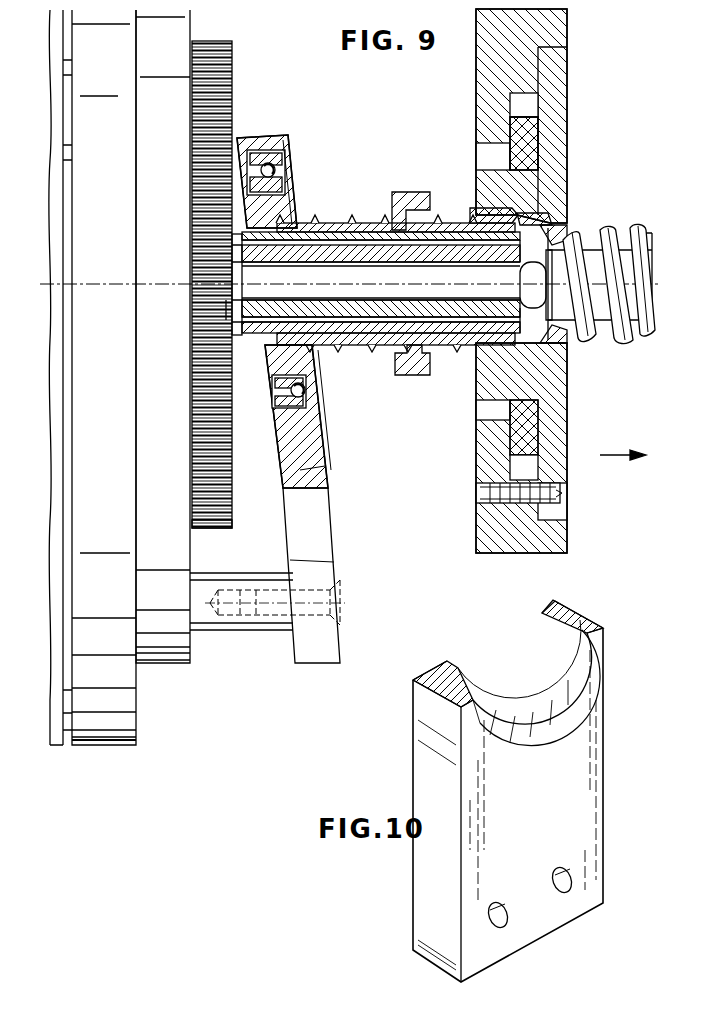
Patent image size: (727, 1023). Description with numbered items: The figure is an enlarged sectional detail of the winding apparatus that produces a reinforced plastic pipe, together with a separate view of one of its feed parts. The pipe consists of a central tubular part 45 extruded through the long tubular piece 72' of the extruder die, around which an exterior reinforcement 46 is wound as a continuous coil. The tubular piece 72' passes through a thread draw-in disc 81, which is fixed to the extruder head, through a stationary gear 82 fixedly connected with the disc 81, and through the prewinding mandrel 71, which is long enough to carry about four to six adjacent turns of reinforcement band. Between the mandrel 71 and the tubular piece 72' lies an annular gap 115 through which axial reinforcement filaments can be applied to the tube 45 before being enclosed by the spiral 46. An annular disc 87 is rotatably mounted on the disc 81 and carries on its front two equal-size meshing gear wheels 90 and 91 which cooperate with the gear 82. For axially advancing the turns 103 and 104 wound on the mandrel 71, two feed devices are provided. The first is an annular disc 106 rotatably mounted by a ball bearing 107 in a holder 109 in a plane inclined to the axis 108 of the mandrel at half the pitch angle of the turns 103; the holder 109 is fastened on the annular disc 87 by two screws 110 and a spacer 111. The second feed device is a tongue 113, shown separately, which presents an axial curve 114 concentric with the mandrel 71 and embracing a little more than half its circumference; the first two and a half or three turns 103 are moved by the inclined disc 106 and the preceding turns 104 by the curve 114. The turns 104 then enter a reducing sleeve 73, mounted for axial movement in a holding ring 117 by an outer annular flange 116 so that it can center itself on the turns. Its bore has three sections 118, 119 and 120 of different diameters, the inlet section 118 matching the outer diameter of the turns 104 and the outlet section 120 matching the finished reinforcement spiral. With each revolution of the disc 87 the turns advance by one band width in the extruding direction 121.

In FIG. 9, the central tubular part 45 is at (613, 236).
In FIG. 9, the exterior reinforcement 46 is at (620, 340).
In FIG. 9, the prewinding mandrel 71 is at (376, 240).
In FIG. 9, the tubular piece of extruder die 72' is at (413, 199).
In FIG. 9, the reducing sleeve 73 is at (555, 216).
In FIG. 9, the thread draw-in disc 81 is at (110, 742).
In FIG. 9, the stationary gear 82 is at (226, 312).
In FIG. 9, the annular disc 87 is at (170, 643).
In FIG. 9, the gear wheel 90 is at (236, 64).
In FIG. 9, the gear wheel 91 is at (236, 527).
In FIG. 9, the turns 103 is at (346, 222).
In FIG. 9, the turns 104 is at (458, 346).
In FIG. 9, the annular disc 106 is at (282, 380).
In FIG. 9, the ball bearing 107 is at (292, 420).
In FIG. 9, the axis 108 is at (88, 282).
In FIG. 9, the holder 109 is at (330, 546).
In FIG. 9, the screws 110 is at (348, 598).
In FIG. 9, the spacer 111 is at (271, 625).
In FIG. 10, the tongue 113 is at (430, 887).
In FIG. 10, the axial curve 114 is at (514, 690).
In FIG. 9, the annular gap 115 is at (236, 240).
In FIG. 9, the outer annular flange 116 is at (533, 157).
In FIG. 9, the holding ring 117 is at (556, 34).
In FIG. 9, the inlet side bore section 118 is at (480, 206).
In FIG. 9, the bore section 119 is at (534, 213).
In FIG. 9, the outlet side bore section 120 is at (556, 346).
In FIG. 9, the extruding direction 121 is at (601, 455).